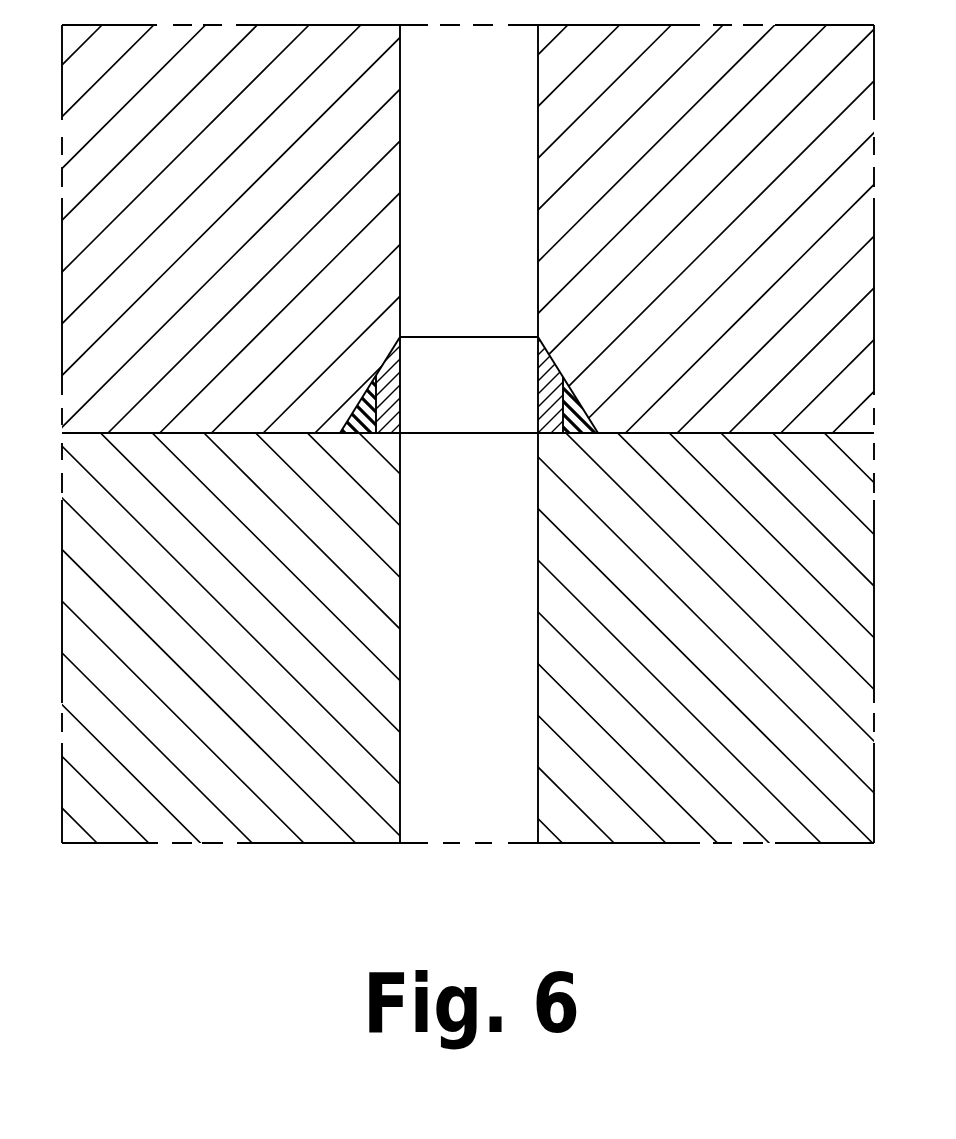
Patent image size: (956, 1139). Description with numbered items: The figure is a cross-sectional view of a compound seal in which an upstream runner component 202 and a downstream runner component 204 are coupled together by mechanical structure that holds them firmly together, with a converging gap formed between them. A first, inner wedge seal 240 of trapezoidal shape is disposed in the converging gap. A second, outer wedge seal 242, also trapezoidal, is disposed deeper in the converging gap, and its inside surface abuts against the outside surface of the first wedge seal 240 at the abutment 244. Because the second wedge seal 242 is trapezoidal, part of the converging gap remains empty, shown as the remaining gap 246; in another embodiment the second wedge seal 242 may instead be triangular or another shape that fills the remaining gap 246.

The upstream runner component 202 is at (265, 219).
The downstream runner component 204 is at (265, 654).
The first, inner wedge seal 240 is at (552, 387).
The second, outer wedge seal 242 is at (357, 409).
The abutment of second wedge seal against first wedge seal 244 is at (552, 415).
The remaining gap 246 is at (610, 424).